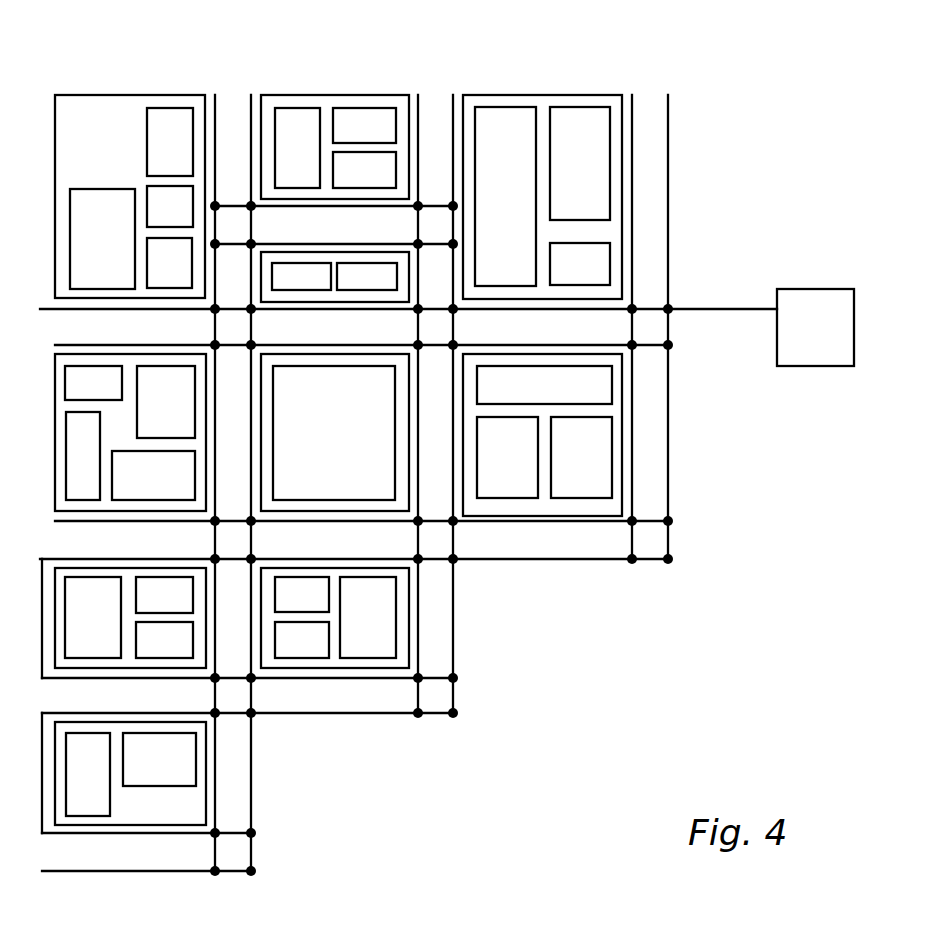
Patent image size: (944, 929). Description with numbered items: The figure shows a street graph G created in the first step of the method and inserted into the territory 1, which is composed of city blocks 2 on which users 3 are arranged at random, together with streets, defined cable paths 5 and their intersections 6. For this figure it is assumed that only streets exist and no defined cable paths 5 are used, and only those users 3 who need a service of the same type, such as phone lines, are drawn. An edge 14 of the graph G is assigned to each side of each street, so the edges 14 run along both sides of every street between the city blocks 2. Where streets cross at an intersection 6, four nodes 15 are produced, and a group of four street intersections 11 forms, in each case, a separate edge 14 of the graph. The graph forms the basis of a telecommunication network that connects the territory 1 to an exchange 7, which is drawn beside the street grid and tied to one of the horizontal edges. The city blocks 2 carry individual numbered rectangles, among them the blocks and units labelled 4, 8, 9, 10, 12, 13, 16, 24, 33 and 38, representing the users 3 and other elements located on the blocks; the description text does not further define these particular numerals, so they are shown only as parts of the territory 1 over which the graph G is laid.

The territory 1 is at (300, 68).
The city block 2 is at (582, 128).
The user 3 is at (508, 130).
The functional unit 4 is at (370, 92).
The defined cable path 5 is at (652, 118).
The intersection 6 is at (197, 535).
The exchange 7 is at (814, 298).
The actuator unit 8 is at (335, 227).
The control unit 9 is at (130, 618).
The electronic module 10 is at (406, 383).
The group of four street intersections 11 is at (557, 620).
The electronic module 12 is at (130, 506).
The electronic module 13 is at (580, 264).
The edge 14 is at (422, 102).
The node 15 is at (633, 561).
The electronic module 16 is at (333, 455).
The electronic component 24 is at (489, 198).
The electronic module 33 is at (130, 773).
The electronic module 38 is at (335, 432).
The graph G is at (342, 724).